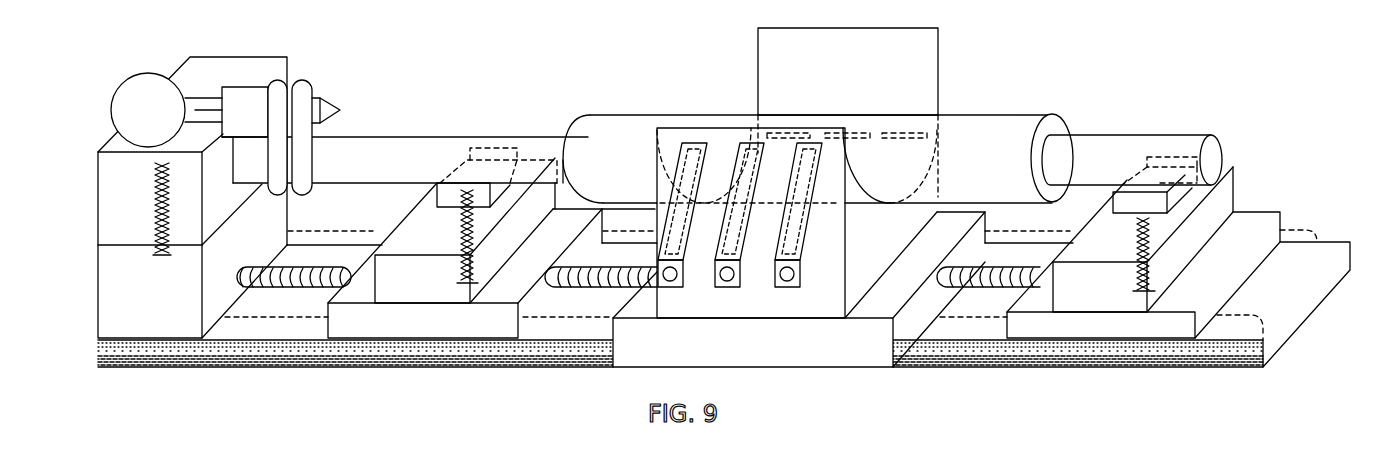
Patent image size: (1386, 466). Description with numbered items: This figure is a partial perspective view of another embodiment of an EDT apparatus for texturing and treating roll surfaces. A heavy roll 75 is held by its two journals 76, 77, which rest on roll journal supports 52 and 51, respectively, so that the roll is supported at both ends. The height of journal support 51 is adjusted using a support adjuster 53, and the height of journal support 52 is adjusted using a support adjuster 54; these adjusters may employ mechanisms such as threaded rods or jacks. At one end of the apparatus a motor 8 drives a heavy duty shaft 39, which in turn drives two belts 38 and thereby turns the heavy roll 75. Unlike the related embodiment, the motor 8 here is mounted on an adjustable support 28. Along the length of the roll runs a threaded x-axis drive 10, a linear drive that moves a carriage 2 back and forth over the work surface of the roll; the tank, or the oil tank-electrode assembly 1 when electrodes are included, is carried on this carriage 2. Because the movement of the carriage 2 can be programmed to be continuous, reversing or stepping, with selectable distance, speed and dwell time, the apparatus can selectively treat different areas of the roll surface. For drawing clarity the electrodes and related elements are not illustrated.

The oil tank-electrode assembly 1 is at (773, 78).
The carriage 2 is at (736, 359).
The motor 8 is at (139, 124).
The threaded x-axis drive 10 is at (613, 267).
The adjustable support 28 is at (263, 209).
The belts 38 is at (275, 86).
The heavy duty shaft 39 is at (245, 120).
The roll journal support 51 is at (445, 196).
The roll journal support 52 is at (1170, 200).
The support adjuster 53 is at (467, 247).
The support adjuster 54 is at (1150, 232).
The heavy roll 75 is at (1022, 128).
The journal 76 is at (1115, 138).
The journal 77 is at (389, 148).